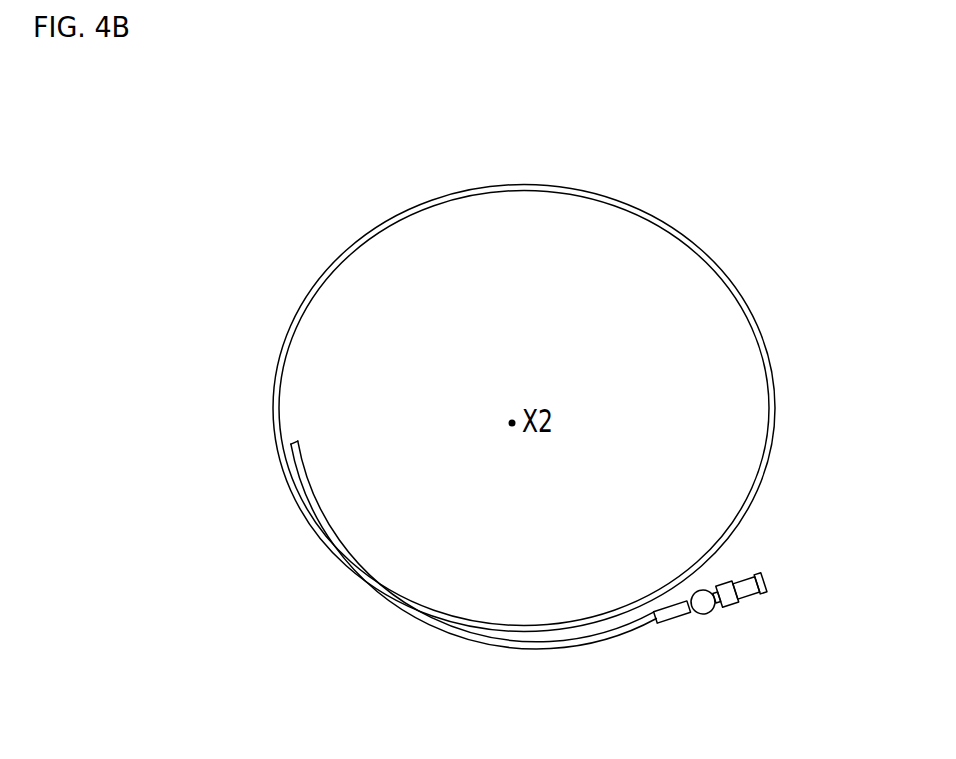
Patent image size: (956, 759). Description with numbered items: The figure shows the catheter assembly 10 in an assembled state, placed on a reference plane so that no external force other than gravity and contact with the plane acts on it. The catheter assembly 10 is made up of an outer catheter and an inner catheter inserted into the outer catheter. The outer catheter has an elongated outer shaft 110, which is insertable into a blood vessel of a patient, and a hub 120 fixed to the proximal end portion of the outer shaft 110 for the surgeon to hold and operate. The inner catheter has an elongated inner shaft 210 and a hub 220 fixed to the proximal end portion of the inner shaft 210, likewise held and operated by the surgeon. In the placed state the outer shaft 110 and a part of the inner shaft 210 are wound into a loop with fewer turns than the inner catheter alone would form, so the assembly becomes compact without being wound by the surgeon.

The catheter assembly 10 is at (153, 139).
The outer shaft 110 is at (437, 191).
The inner shaft 210 is at (313, 481).
The hub 120 is at (700, 616).
The hub 220 is at (748, 603).